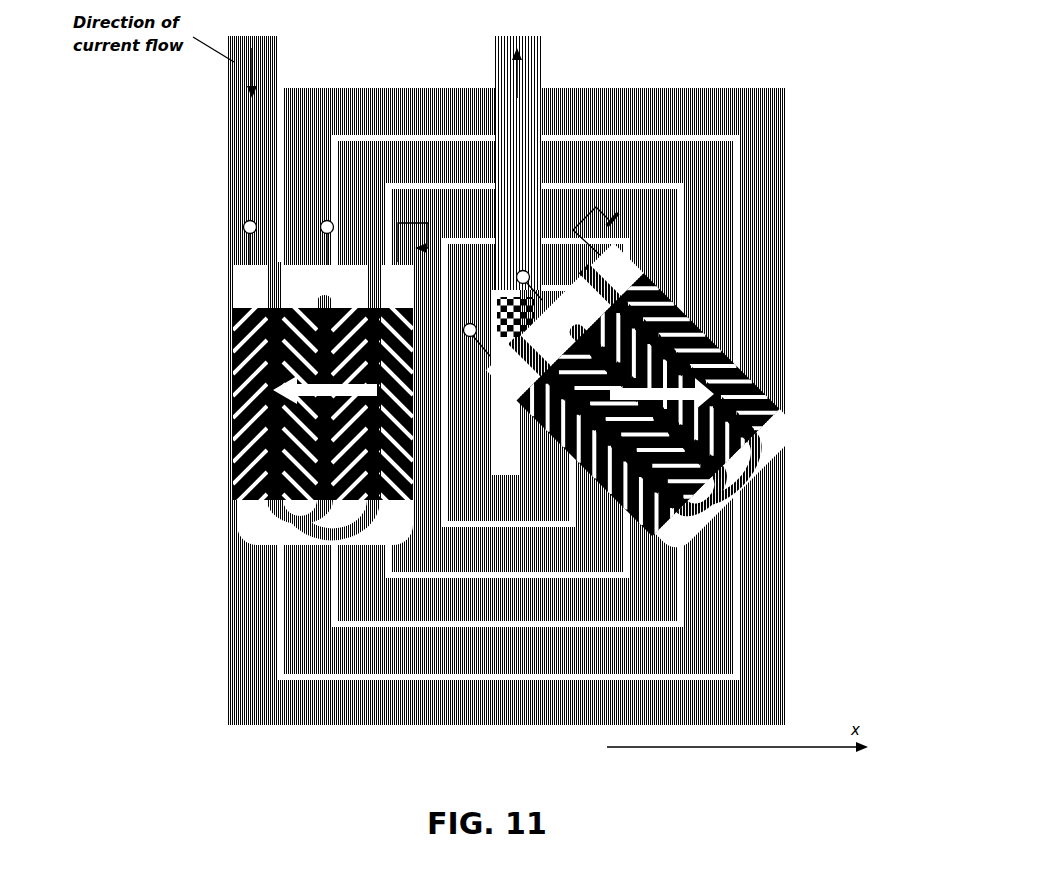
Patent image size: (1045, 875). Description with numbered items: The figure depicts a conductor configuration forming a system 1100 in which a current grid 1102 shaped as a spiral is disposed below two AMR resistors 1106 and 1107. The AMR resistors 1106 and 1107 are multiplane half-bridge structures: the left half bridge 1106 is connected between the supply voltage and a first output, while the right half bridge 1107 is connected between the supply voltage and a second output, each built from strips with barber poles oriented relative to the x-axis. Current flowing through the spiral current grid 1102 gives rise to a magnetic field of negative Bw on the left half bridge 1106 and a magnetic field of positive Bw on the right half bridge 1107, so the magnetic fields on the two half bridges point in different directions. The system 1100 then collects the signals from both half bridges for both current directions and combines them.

The system 1100 is at (506, 368).
The current grid 1102 is at (787, 107).
The AMR resistor (left half bridge) 1106 is at (245, 283).
The AMR resistor (right half bridge) 1107 is at (778, 447).